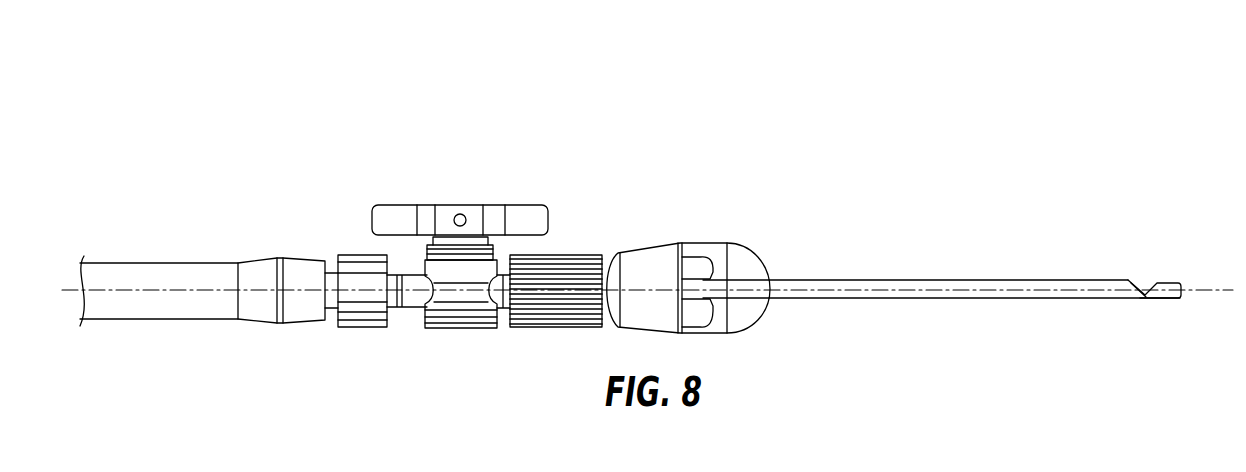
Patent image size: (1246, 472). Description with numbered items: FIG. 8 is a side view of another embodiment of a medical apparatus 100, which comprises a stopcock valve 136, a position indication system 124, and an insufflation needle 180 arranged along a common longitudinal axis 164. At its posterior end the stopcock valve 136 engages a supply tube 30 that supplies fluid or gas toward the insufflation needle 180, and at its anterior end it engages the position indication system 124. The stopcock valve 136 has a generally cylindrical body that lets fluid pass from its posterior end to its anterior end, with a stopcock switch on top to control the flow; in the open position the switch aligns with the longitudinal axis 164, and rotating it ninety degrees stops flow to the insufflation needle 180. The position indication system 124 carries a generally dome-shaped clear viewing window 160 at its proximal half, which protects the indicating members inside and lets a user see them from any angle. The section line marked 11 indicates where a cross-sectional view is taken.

The introducer assembly 100 is at (790, 137).
The tubing 30 is at (195, 275).
The valve 136 is at (443, 194).
The connector 124 is at (727, 234).
The hub housing 160 is at (770, 270).
The needle 180 is at (954, 258).
The needle tip 164 is at (1187, 287).
The section line 11- 11 is at (562, 305).